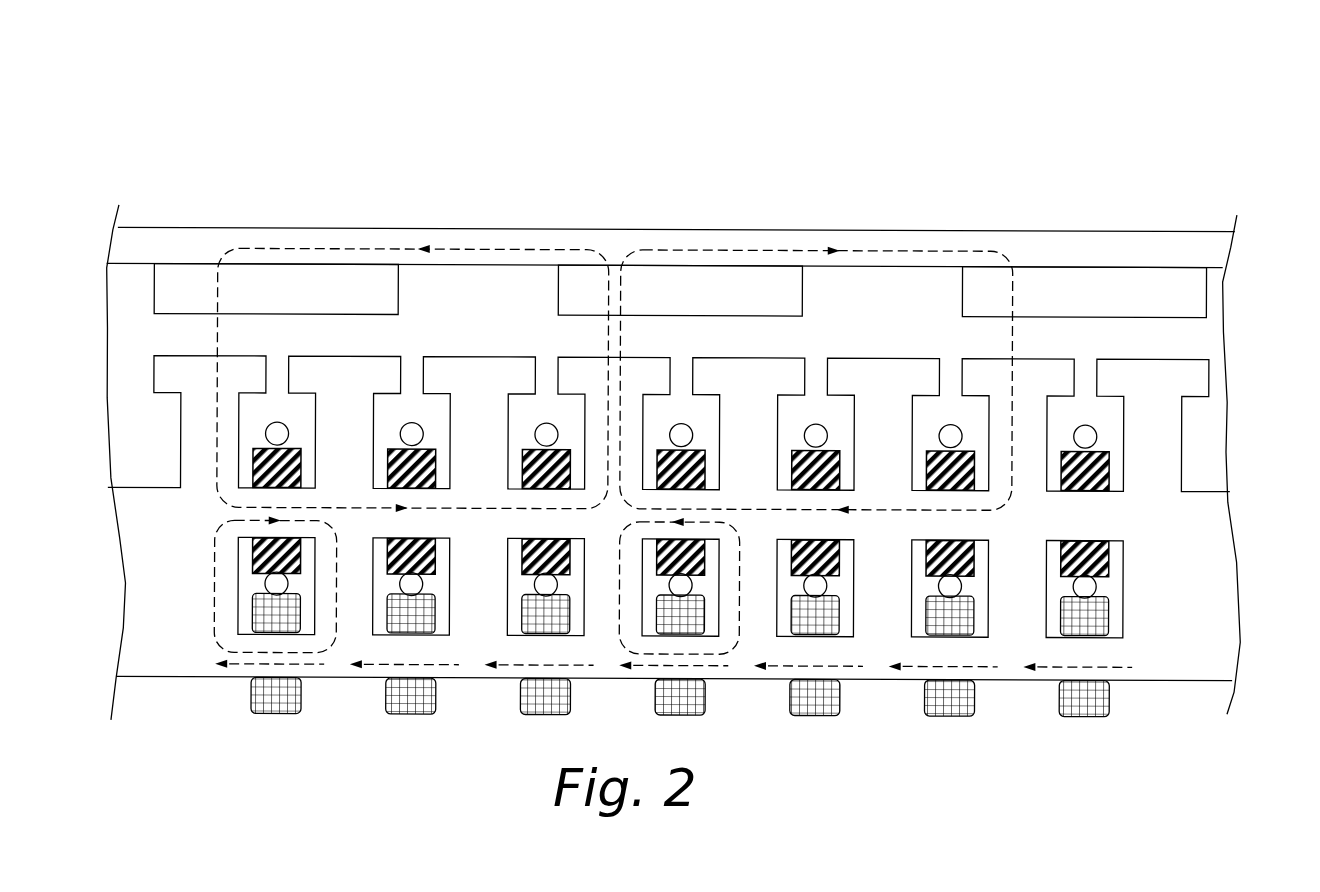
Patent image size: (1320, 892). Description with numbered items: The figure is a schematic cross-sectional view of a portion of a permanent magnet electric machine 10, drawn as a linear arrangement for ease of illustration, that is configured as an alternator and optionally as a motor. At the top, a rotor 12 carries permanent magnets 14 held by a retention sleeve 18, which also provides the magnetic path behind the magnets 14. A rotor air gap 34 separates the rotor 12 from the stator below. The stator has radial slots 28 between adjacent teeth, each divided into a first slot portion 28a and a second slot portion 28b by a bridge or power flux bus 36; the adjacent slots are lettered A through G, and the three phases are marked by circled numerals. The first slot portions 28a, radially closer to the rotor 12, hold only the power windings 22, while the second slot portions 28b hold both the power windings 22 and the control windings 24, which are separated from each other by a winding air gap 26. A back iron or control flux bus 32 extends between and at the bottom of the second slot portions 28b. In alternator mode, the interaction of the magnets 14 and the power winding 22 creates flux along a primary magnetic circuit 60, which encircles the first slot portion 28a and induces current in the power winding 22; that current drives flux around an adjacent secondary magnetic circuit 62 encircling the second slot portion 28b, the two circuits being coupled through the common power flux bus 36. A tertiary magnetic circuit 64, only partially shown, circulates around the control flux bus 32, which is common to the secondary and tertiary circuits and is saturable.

The permanent magnet electric machine 10 is at (200, 200).
The rotor 12 is at (1148, 252).
The permanent magnets 14 is at (183, 290).
The retention sleeve 18 is at (613, 228).
The power winding 22 is at (1112, 473).
The control winding 24 is at (1112, 612).
The winding air gap 26 is at (250, 583).
The radial slots 28 is at (632, 486).
The first slot portion 28a is at (237, 423).
The second slot portion 28b is at (237, 557).
The control flux bus 32 is at (240, 642).
The rotor air gap 34 is at (1163, 338).
The power flux bus 36 is at (240, 498).
The primary magnetic circuit 60 is at (215, 465).
The secondary magnetic circuit 62 is at (215, 602).
The tertiary magnetic circuit 64 is at (250, 667).